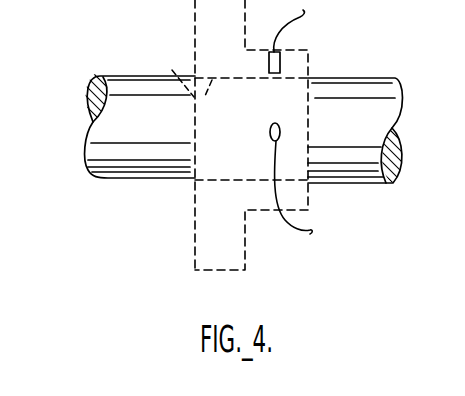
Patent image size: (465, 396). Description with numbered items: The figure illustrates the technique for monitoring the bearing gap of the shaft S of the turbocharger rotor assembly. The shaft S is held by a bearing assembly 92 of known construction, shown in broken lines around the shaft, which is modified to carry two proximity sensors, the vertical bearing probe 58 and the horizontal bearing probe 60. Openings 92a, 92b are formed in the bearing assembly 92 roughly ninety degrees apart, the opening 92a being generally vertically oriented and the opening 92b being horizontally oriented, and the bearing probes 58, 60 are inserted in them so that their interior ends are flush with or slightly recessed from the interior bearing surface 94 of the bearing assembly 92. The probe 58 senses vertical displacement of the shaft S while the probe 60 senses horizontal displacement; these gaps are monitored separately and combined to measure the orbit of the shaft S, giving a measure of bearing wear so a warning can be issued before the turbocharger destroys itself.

The shaft S is at (132, 181).
The bearing assembly 92 is at (195, 272).
The opening 92a is at (281, 60).
The opening 92b is at (271, 125).
The interior bearing surface 94 is at (172, 68).
The vertical bearing probe 58 is at (268, 70).
The horizontal bearing probe 60 is at (270, 139).